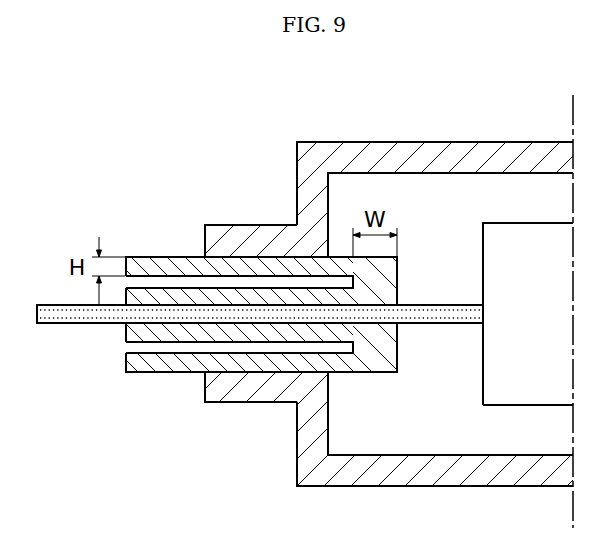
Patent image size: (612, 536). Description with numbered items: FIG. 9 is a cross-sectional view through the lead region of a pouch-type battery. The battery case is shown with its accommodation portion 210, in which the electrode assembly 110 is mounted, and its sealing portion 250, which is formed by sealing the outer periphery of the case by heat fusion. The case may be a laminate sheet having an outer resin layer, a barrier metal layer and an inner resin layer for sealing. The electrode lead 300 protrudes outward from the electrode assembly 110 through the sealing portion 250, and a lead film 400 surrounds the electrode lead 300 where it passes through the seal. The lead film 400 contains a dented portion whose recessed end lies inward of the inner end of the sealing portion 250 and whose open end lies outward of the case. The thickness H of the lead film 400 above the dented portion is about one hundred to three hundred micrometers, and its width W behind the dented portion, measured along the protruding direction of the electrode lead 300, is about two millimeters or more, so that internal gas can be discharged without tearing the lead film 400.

The electrode assembly 110 is at (525, 235).
The accommodation portion 210 is at (375, 152).
The sealing portion 250 is at (255, 230).
The electrode lead 300 is at (90, 318).
The lead film 400 is at (171, 265).